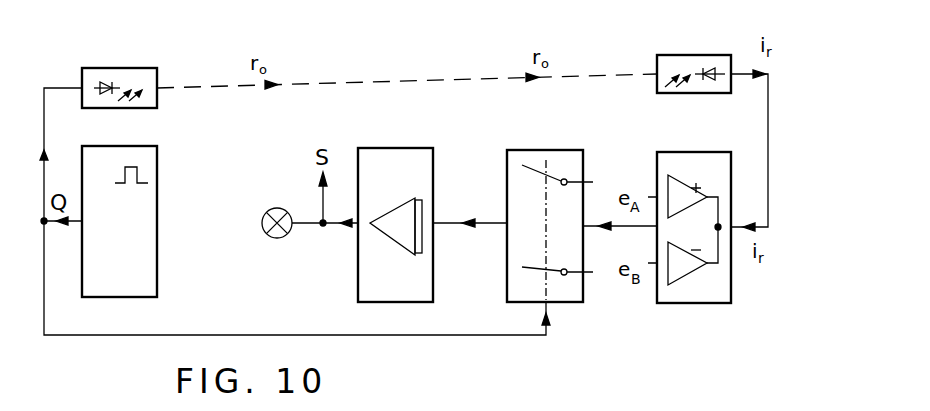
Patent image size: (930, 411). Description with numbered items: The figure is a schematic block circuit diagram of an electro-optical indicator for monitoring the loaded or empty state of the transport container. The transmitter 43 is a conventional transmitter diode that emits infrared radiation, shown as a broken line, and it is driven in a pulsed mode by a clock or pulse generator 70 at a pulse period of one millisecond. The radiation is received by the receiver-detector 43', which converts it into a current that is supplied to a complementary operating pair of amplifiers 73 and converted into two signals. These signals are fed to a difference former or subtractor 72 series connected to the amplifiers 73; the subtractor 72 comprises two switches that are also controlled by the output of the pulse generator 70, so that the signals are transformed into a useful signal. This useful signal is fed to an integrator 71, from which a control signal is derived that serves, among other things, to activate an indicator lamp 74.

The transmitter 43 is at (119, 64).
The receiver-detector 43' is at (694, 51).
The clock or pulse generator 70 is at (140, 283).
The integrator 71 is at (380, 288).
The difference former or subtractor 72 is at (570, 290).
The complementary operating pair of amplifiers 73 is at (707, 297).
The indicator lamp 74 is at (268, 237).